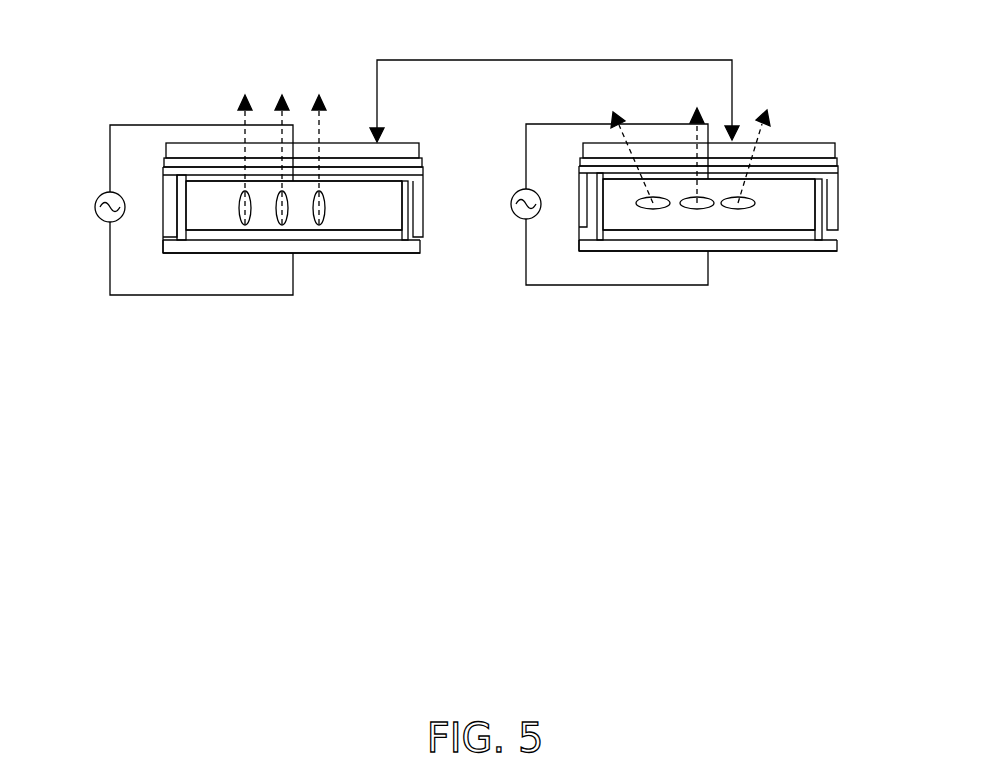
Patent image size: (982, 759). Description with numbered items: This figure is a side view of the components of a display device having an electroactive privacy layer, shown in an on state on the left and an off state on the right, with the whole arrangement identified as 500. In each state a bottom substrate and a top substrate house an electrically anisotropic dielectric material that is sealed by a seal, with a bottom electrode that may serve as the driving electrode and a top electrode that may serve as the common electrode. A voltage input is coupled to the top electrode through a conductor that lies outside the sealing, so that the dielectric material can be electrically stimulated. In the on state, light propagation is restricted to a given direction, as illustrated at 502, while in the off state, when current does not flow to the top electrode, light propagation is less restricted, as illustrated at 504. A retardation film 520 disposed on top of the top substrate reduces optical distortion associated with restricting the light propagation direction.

The electrowetting display system 500 is at (479, 365).
The restricted light propagation in on state 502 is at (245, 224).
The less restricted light propagation in off state 504 is at (662, 208).
The retardation film 520 is at (415, 60).